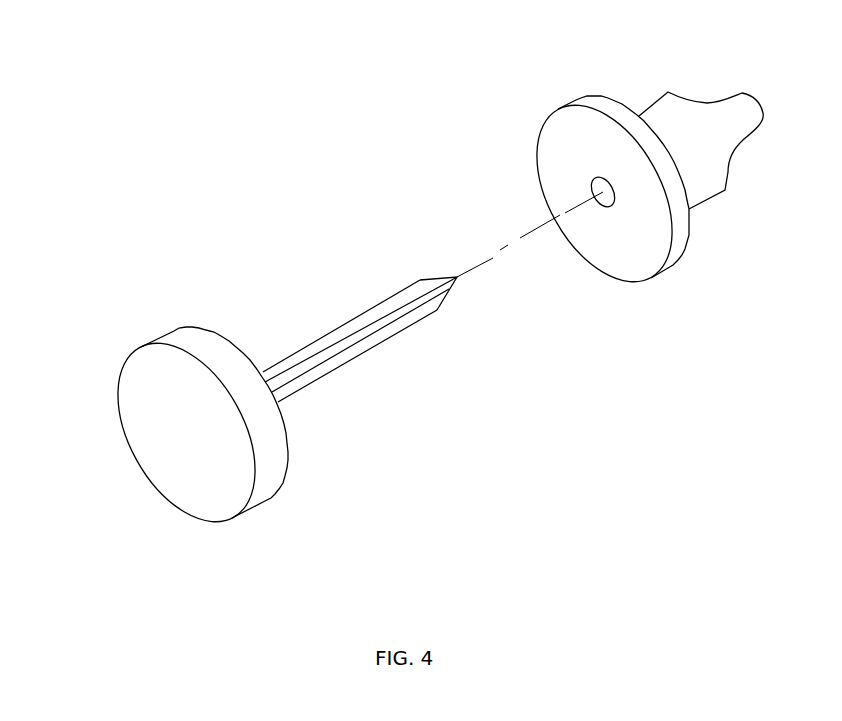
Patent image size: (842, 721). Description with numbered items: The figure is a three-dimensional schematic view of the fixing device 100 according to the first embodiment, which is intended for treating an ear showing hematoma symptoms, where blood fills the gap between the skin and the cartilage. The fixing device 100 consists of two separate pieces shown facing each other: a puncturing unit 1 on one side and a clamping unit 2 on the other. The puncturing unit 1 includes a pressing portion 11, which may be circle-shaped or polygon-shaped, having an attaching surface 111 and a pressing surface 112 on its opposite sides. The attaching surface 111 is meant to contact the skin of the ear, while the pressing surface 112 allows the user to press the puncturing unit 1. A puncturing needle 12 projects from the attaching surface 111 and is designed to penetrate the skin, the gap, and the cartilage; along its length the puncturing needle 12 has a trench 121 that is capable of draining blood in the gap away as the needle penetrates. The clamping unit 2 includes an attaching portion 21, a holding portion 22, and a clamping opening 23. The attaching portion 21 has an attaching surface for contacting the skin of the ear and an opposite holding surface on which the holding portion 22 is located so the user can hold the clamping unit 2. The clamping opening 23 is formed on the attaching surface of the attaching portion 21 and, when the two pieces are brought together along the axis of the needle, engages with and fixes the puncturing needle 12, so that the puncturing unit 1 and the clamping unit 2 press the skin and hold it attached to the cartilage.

The fixing device 100 is at (233, 160).
The puncturing unit 1 is at (242, 308).
The pressing portion 11 is at (148, 487).
The attaching surface 111 is at (288, 455).
The pressing surface 112 is at (197, 500).
The puncturing needle 12 is at (367, 343).
The trench 121 is at (322, 357).
The clamping unit 2 is at (588, 80).
The attaching portion 21 is at (675, 273).
The holding portion 22 is at (757, 178).
The clamping opening 23 is at (607, 203).